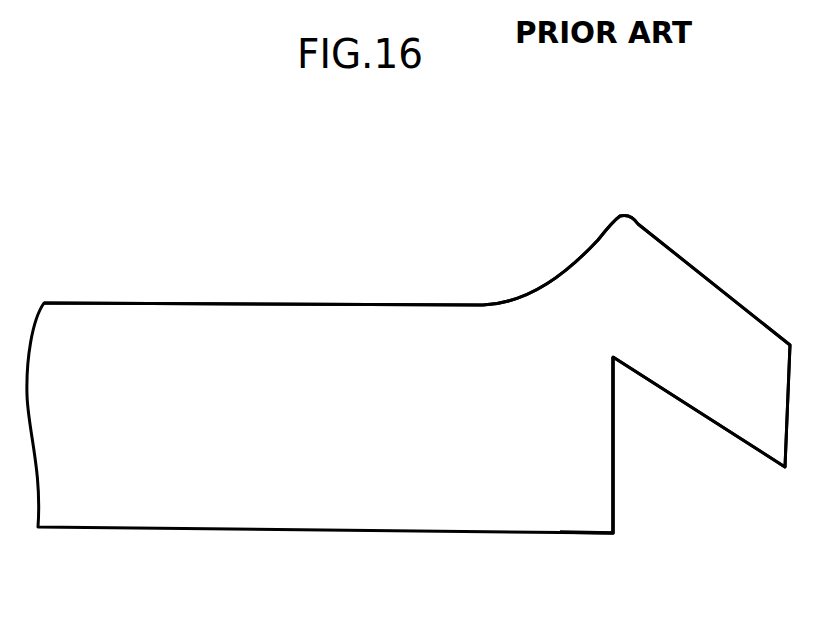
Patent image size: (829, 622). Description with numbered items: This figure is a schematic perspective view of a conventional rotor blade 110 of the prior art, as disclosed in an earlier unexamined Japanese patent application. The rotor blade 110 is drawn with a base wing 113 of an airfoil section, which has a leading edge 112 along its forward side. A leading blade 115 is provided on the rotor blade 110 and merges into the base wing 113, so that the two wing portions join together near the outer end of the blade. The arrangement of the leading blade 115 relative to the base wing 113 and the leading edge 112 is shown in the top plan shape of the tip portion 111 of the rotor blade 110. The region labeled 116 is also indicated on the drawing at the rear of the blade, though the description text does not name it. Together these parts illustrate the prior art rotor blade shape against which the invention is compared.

The rotor blade 110 is at (197, 232).
The tip portion 111 is at (437, 277).
The leading edge 112 is at (568, 224).
The base wing 113 is at (307, 323).
The leading blade 115 is at (720, 300).
The rear end face 116 is at (608, 536).